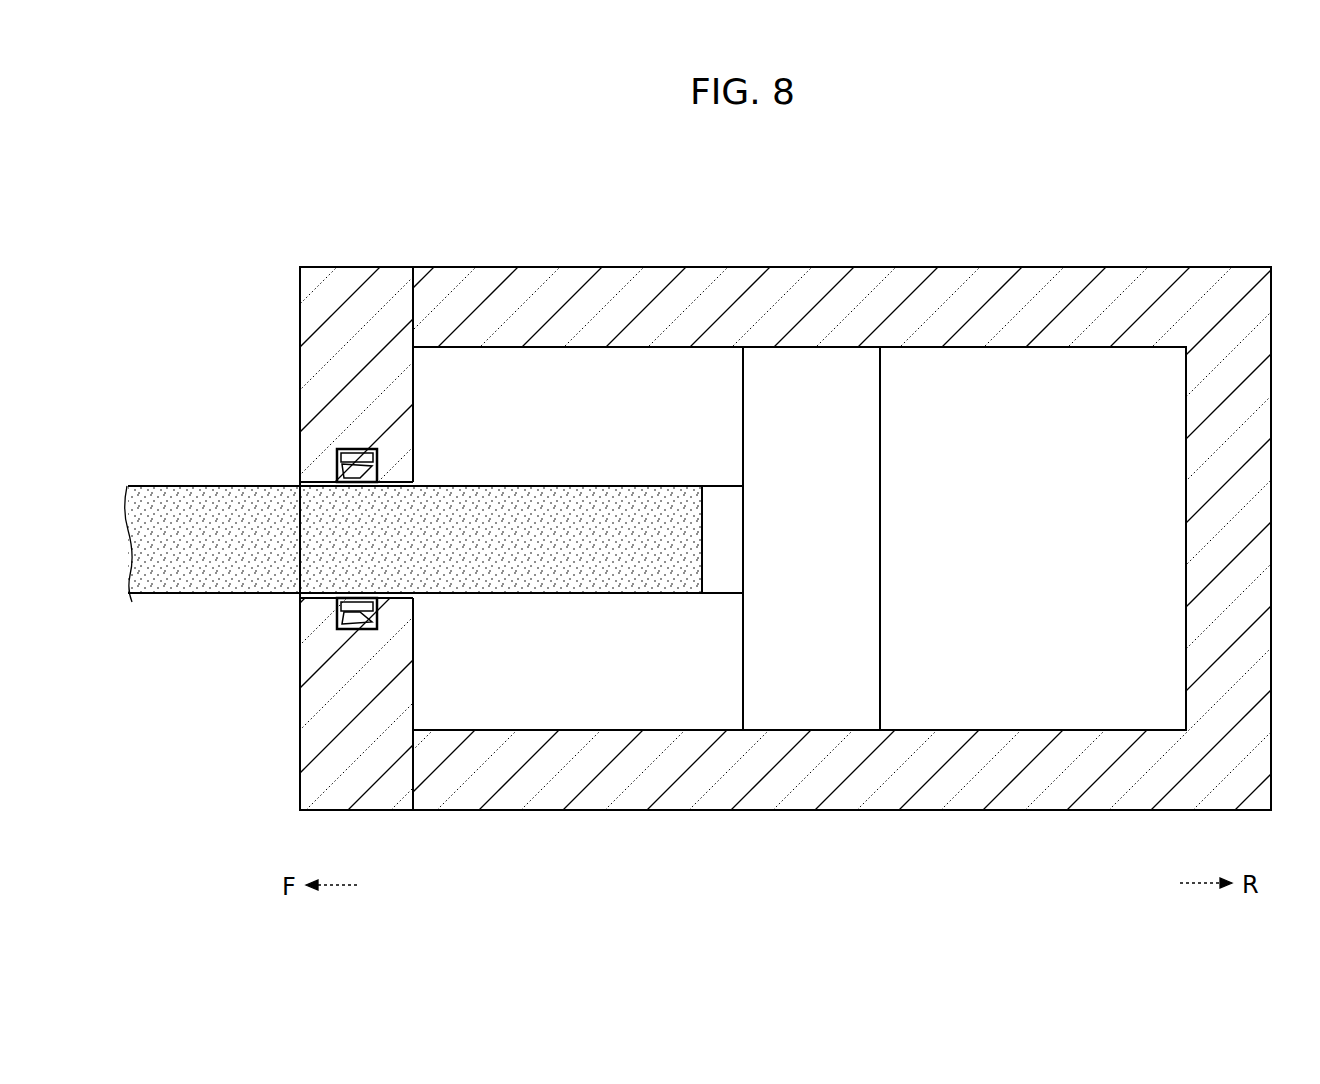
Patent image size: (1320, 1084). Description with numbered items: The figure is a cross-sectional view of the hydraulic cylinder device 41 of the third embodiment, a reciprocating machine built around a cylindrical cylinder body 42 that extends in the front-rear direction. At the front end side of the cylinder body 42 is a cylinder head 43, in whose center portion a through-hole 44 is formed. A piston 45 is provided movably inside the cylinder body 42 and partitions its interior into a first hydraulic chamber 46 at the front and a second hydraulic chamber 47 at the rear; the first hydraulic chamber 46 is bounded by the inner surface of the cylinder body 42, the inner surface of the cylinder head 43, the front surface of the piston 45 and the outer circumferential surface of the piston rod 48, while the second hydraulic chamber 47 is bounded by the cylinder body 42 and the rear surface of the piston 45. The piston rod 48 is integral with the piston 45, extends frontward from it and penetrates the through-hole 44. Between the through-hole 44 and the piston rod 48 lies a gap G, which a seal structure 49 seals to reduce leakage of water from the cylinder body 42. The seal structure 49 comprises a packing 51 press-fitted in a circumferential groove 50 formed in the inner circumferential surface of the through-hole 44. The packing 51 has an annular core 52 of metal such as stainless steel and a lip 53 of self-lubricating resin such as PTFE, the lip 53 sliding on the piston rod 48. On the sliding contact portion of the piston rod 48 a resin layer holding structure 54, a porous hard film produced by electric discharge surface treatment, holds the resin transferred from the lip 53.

The hydraulic cylinder device 41 is at (832, 172).
The cylinder body 42 is at (907, 262).
The cylinder head 43 is at (300, 352).
The through-hole 44 is at (316, 592).
The piston 45 is at (872, 487).
The first hydraulic chamber 46 is at (603, 365).
The second hydraulic chamber 47 is at (1080, 365).
The piston rod 48 is at (562, 483).
The seal structure 49 is at (389, 419).
The circumferential groove 50 is at (337, 458).
The packing 51 is at (435, 521).
The annular core 52 is at (366, 454).
The lip 53 is at (372, 465).
The resin layer holding structure 54 is at (202, 486).
The gap G is at (420, 596).